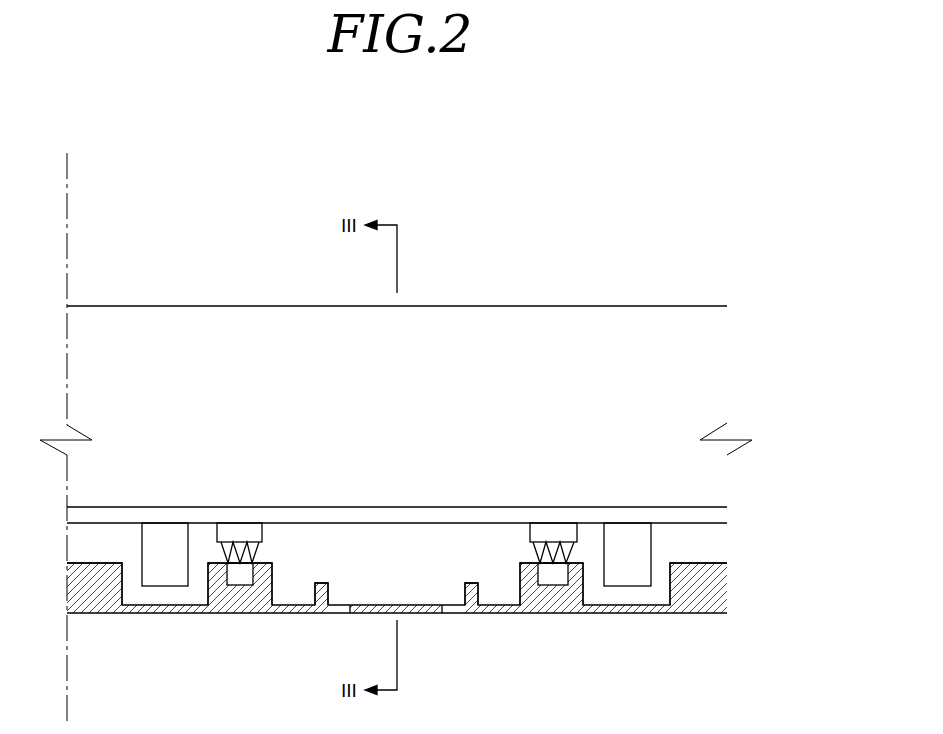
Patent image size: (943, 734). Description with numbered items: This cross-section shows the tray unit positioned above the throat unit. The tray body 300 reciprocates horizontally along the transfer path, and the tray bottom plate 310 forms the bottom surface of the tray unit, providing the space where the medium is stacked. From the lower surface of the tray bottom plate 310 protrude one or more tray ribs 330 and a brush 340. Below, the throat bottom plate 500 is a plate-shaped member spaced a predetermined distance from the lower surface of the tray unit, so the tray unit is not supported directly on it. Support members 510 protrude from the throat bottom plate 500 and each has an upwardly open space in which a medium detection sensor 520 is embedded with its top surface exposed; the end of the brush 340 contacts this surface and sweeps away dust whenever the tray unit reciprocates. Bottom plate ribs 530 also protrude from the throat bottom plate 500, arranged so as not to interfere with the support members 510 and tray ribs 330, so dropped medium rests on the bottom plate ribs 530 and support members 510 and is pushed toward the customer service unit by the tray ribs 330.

The tray body 300 is at (708, 386).
The tray bottom plate 310 is at (462, 515).
The tray rib 330 is at (627, 530).
The brush 340 is at (555, 528).
The throat bottom plate 500 is at (628, 610).
The support member 510 is at (93, 570).
The medium detection sensor 520 is at (551, 580).
The bottom plate rib 530 is at (323, 583).